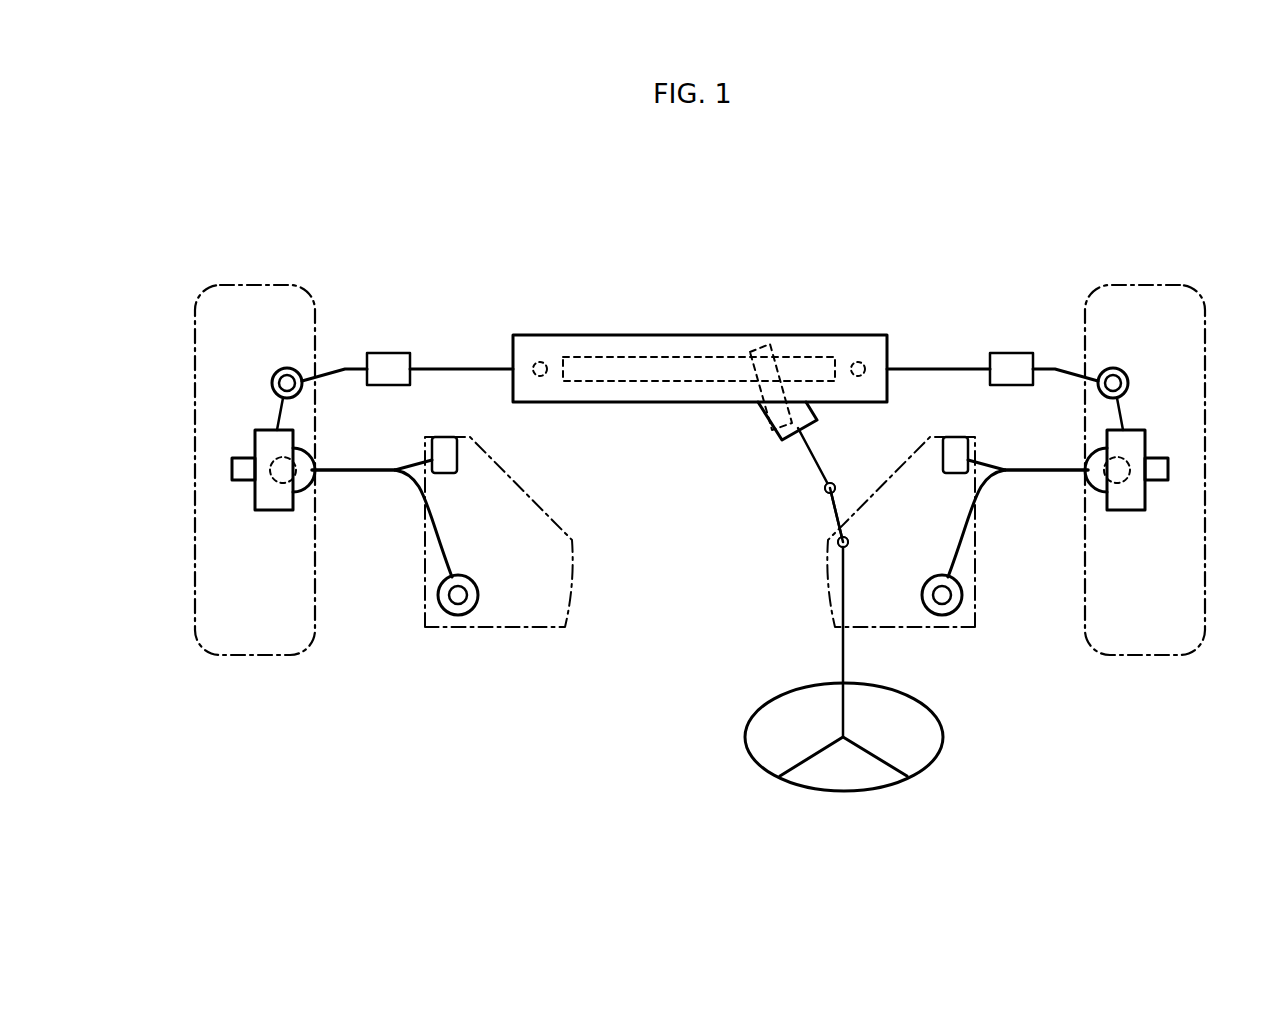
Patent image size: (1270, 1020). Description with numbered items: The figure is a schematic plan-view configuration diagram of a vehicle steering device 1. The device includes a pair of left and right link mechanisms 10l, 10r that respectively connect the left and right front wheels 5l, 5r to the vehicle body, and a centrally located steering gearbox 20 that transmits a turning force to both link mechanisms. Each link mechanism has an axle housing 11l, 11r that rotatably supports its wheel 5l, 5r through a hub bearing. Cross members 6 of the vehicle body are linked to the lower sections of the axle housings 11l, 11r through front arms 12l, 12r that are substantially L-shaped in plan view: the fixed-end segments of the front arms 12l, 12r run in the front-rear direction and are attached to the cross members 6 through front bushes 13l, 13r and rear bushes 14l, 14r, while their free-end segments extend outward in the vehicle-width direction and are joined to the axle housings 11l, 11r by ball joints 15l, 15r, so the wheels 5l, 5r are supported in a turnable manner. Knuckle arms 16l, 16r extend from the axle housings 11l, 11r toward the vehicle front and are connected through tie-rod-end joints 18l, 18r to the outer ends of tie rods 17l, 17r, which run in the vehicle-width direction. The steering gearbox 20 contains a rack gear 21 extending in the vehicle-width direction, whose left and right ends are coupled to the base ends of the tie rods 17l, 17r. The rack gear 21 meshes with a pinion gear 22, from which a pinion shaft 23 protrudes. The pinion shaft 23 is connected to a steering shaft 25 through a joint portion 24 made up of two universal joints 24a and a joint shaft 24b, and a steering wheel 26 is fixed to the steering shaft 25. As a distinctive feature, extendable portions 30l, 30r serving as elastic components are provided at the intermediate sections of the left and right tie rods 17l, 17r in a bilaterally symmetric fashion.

The vehicle steering device 1 is at (853, 236).
The left wheel 5l is at (258, 283).
The right wheel 5r is at (1142, 283).
The cross member 6 is at (472, 630).
The left link mechanism 10l is at (349, 302).
The right link mechanism 10r is at (1051, 302).
The left axle housing 11l is at (270, 512).
The right axle housing 11r is at (1130, 512).
The left front arm 12l is at (352, 473).
The right front arm 12r is at (1048, 473).
The left front bush 13l is at (450, 437).
The right front bush 13r is at (950, 437).
The left rear bush 14l is at (475, 588).
The right rear bush 14r is at (925, 588).
The left ball joint 15l is at (313, 465).
The right ball joint 15r is at (1087, 465).
The left knuckle arm 16l is at (280, 415).
The right knuckle arm 16r is at (1120, 415).
The left tie rod 17l is at (462, 369).
The right tie rod 17r is at (938, 369).
The left tie-rod-end joint 18l is at (278, 372).
The right tie-rod-end joint 18r is at (1122, 372).
The steering gearbox 20 is at (702, 302).
The rack gear 21 is at (649, 355).
The pinion gear 22 is at (761, 352).
The pinion shaft 23 is at (772, 430).
The joint portion 24 is at (750, 470).
The universal joint 24a is at (825, 489).
The joint shaft 24b is at (838, 516).
The steering shaft 25 is at (842, 650).
The steering wheel 26 is at (752, 720).
The left extendable portion 30l is at (390, 353).
The right extendable portion 30r is at (1010, 353).